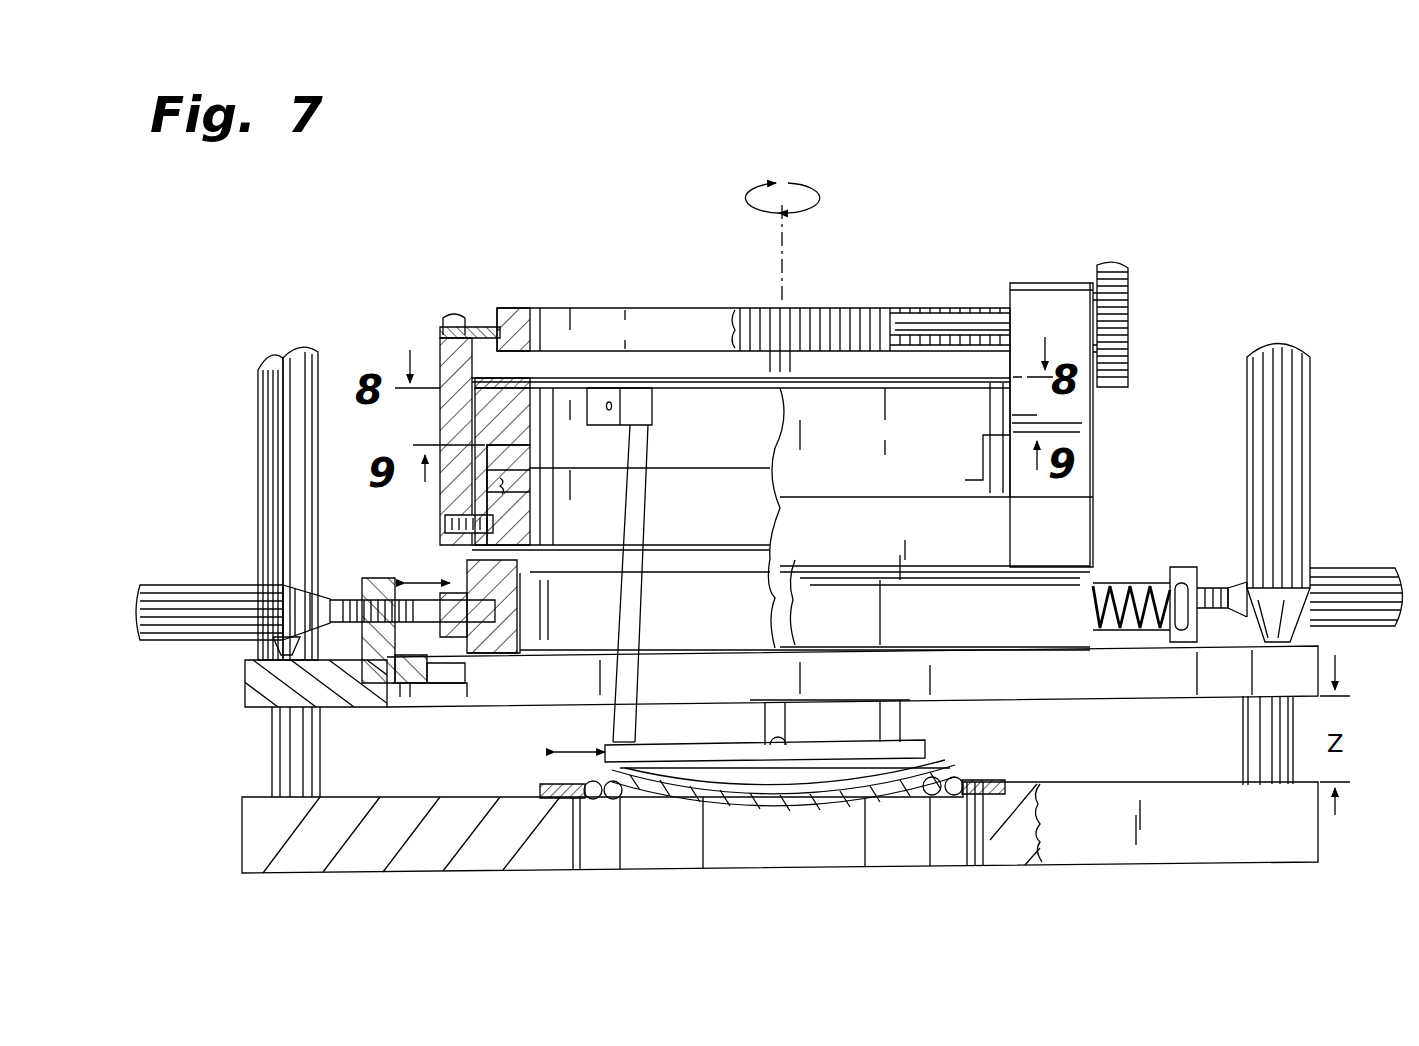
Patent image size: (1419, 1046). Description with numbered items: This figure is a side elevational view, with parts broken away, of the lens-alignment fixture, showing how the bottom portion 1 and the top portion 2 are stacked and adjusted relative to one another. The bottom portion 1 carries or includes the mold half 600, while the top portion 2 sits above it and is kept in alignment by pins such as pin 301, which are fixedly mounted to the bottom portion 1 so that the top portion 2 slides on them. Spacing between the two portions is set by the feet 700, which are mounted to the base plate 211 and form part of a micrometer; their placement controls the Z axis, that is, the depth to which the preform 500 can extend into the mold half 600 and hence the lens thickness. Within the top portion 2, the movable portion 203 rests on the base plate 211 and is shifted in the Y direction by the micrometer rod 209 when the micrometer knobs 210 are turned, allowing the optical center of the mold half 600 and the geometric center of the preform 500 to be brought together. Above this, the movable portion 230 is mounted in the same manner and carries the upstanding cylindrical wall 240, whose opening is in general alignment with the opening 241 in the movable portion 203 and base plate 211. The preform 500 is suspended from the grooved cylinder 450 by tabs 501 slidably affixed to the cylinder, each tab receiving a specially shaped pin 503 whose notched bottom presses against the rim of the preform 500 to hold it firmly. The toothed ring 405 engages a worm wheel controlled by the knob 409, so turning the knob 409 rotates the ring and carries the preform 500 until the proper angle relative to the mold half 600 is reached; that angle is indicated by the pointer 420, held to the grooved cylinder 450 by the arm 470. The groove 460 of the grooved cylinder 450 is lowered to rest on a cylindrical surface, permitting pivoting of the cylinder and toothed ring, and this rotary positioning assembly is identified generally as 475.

The bottom portion 1 is at (232, 832).
The top portion 2 is at (228, 692).
The micrometer knobs 210 is at (182, 600).
The rod 209 is at (440, 604).
The movable portion 203 is at (497, 650).
The feet 700 is at (275, 767).
The pin 301 is at (305, 765).
The arm 470 is at (442, 490).
The pointer 420 is at (497, 322).
The toothed ring 405 is at (872, 295).
The positioning assembly 475 is at (410, 278).
The movable portion 230 is at (1075, 530).
The grooved cylinder 450 is at (958, 470).
The knob 409 is at (1130, 275).
The upstanding cylindrical wall 240 is at (790, 462).
The tabs 501 is at (638, 405).
The pin 503 is at (645, 508).
The groove 460 is at (512, 494).
The opening 241 is at (583, 625).
The base plate 211 is at (1138, 670).
The preform 500 is at (948, 750).
The mold half 600 is at (762, 795).